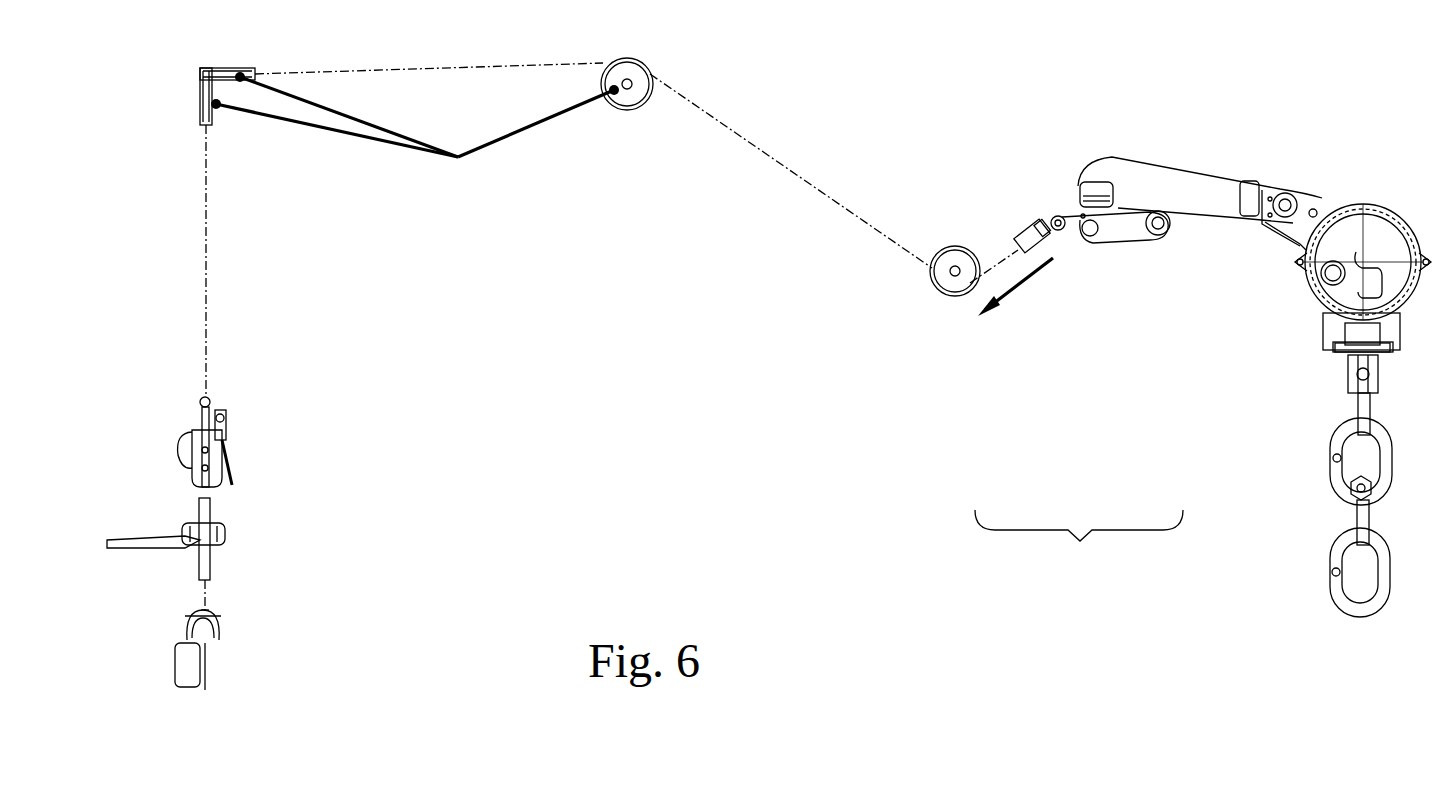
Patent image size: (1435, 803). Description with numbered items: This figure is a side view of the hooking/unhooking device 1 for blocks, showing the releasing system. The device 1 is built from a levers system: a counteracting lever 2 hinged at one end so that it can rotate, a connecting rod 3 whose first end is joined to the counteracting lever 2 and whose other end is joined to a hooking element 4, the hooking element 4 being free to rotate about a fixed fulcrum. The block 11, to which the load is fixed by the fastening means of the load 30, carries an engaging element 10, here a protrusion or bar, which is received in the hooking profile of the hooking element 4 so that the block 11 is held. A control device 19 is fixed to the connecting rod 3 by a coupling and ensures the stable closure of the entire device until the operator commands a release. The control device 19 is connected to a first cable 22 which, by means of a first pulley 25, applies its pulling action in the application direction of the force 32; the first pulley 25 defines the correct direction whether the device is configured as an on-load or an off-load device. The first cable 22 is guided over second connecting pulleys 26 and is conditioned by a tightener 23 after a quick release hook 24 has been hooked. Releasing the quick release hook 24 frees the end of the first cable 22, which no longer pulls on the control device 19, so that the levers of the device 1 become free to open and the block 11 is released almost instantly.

The hooking/unhooking device 1 is at (1079, 551).
The counteracting lever 2 is at (1127, 235).
The connecting rod 3 is at (1218, 207).
The hooking element 4 is at (1302, 228).
The engaging element 10 is at (1366, 258).
The block 11 is at (1365, 348).
The control device 19 is at (1032, 223).
The first cable 22 is at (205, 251).
The tightener 23 is at (220, 547).
The quick release hook 24 is at (231, 441).
The first pulley 25 is at (955, 254).
The second connecting pulleys 26 is at (426, 128).
The fastening means of the load 30 is at (1337, 470).
The force 32 is at (1022, 282).